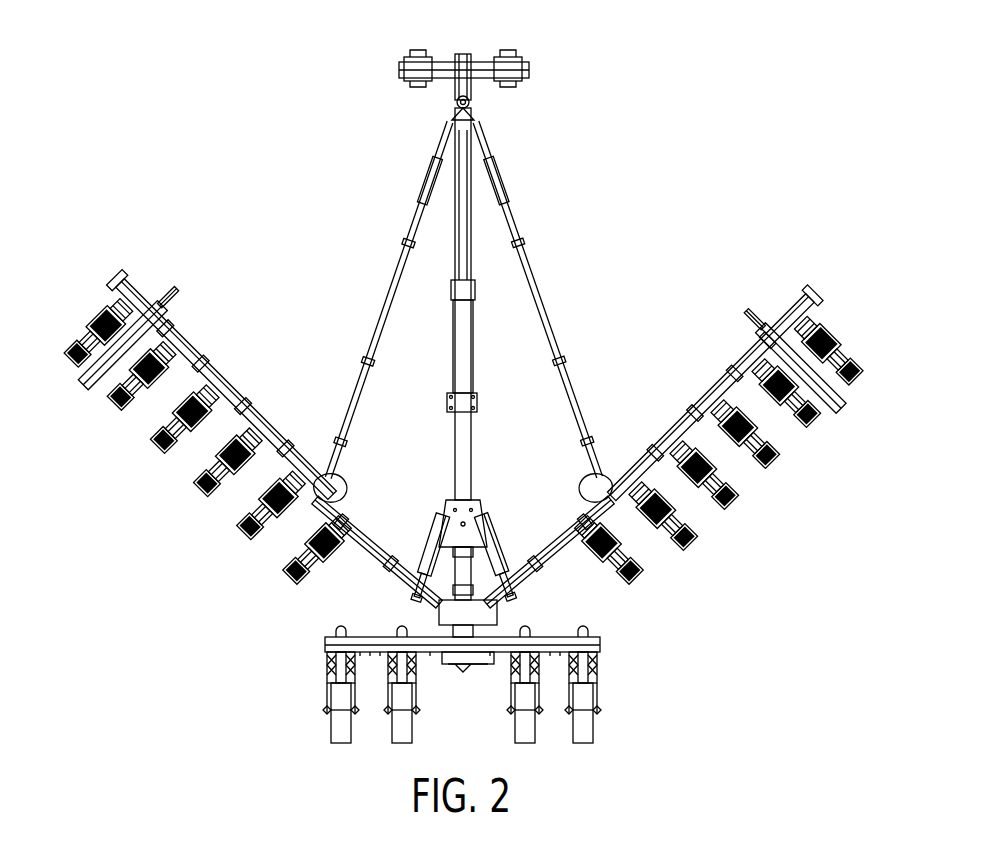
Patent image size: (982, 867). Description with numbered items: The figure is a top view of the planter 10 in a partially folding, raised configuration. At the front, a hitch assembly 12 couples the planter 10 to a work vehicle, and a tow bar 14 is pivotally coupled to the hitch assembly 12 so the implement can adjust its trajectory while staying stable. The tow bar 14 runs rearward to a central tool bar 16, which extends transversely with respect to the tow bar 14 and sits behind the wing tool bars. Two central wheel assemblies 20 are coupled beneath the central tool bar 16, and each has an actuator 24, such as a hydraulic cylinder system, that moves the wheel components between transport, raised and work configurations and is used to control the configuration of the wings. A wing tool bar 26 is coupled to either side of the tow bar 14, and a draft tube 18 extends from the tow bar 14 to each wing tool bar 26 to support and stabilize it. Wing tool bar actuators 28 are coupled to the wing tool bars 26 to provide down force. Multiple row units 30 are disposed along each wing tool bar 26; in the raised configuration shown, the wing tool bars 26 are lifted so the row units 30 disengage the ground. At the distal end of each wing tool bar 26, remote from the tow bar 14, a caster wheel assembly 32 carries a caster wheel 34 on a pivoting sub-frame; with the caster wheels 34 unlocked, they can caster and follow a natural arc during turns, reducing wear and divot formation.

The planter 10 is at (788, 522).
The hitch assembly 12 is at (466, 62).
The tow bar 14 is at (472, 208).
The central tool bar 16 is at (560, 637).
The draft tube 18 is at (388, 312).
The central wheel assembly 20 is at (340, 744).
The actuator 24 is at (435, 538).
The wing tool bar 26 is at (220, 412).
The wing tool bar actuator 28 is at (176, 302).
The row unit 30 is at (172, 403).
The caster wheel assembly 32 is at (78, 390).
The caster wheel 34 is at (100, 388).